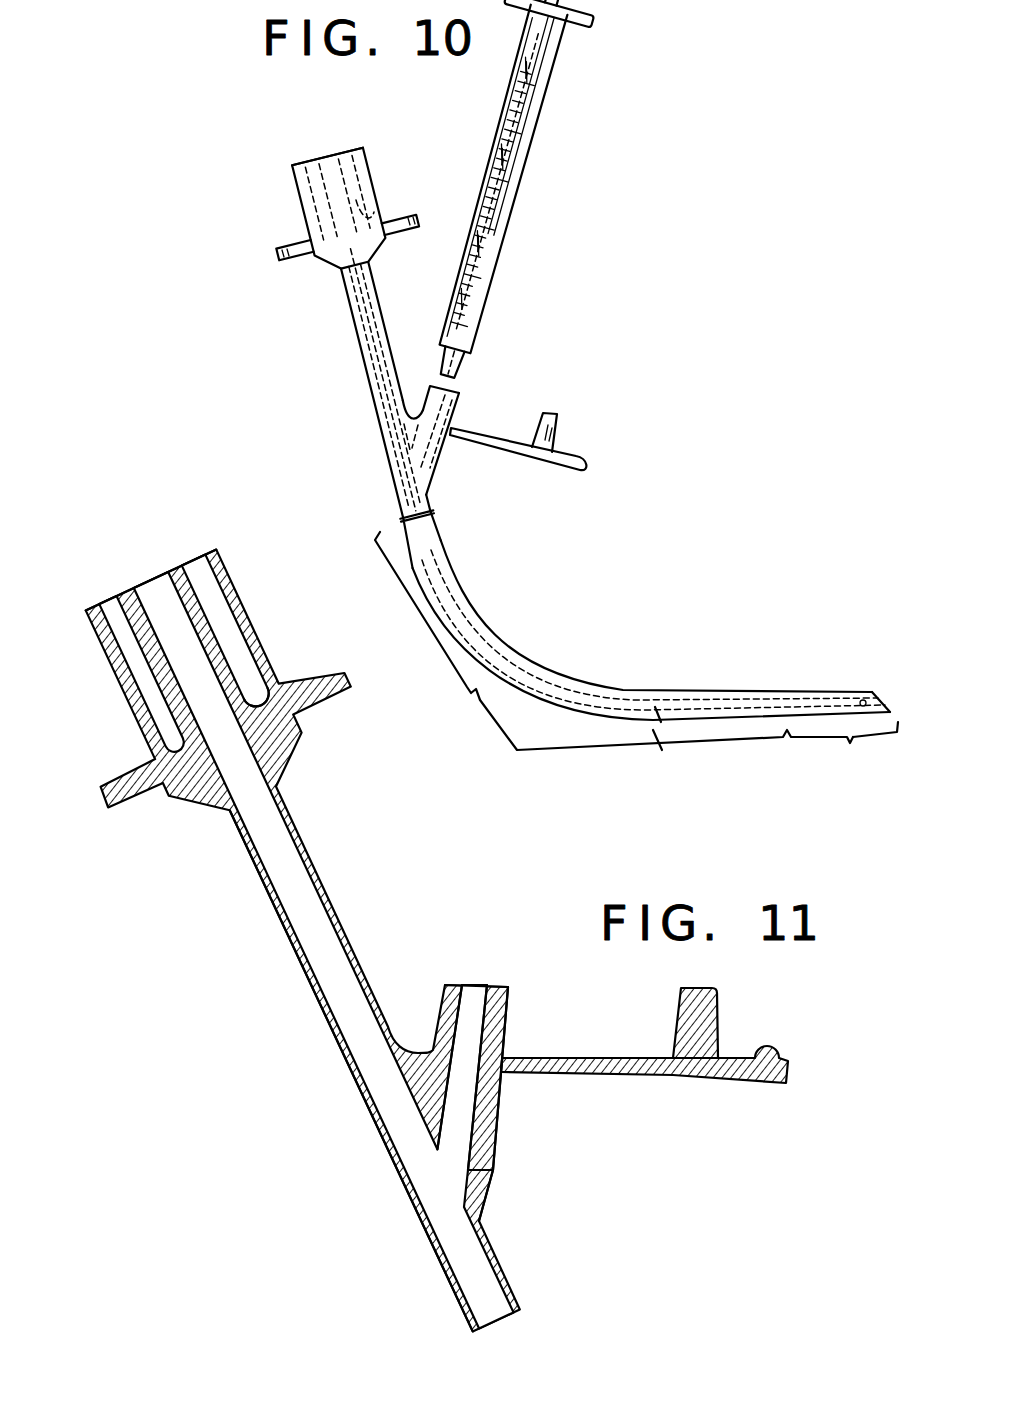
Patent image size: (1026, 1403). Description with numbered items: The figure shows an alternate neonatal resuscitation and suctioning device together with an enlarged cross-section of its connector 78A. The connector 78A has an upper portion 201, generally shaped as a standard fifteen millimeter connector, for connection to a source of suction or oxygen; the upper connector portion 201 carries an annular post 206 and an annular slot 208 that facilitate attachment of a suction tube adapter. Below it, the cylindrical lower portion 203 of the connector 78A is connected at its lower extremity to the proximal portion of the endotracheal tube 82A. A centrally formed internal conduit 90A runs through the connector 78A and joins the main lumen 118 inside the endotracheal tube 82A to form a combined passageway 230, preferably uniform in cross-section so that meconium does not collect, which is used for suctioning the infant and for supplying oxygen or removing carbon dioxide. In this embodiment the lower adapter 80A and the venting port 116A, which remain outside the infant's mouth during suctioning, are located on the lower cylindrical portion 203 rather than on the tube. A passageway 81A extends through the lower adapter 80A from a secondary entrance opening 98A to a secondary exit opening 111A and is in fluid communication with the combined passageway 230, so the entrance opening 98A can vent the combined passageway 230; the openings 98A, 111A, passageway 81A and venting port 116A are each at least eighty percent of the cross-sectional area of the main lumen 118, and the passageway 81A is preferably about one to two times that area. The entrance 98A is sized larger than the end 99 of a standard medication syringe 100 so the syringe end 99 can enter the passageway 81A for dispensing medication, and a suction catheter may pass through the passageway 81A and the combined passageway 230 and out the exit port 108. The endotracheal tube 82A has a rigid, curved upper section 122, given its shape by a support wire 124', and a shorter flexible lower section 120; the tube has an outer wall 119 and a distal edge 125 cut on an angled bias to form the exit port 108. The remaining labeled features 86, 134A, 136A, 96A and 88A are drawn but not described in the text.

In FIG. 10, the connector hub 86 is at (330, 156).
In FIG. 11, the connector hub 86 is at (150, 580).
In FIG. 10, the upper connector portion 201 is at (292, 183).
In FIG. 11, the upper connector portion 201 is at (130, 710).
In FIG. 10, the annular slot 208 is at (360, 170).
In FIG. 11, the annular slot 208 is at (222, 618).
In FIG. 10, the annular post 206 is at (358, 205).
In FIG. 11, the annular post 206 is at (243, 697).
In FIG. 10, the standard medication syringe 100 is at (518, 180).
In FIG. 10, the syringe end 99 is at (463, 372).
In FIG. 10, the internal conduit 90A is at (365, 310).
In FIG. 11, the internal conduit 90A is at (293, 853).
In FIG. 10, the cylindrical lower portion 203 is at (358, 338).
In FIG. 11, the cylindrical lower portion 203 is at (280, 918).
In FIG. 10, the connector 78A is at (350, 398).
In FIG. 11, the connector 78A is at (288, 968).
In FIG. 10, the secondary exit opening 111A is at (405, 465).
In FIG. 11, the secondary exit opening 111A is at (490, 1172).
In FIG. 10, the secondary entrance opening 98A is at (460, 388).
In FIG. 11, the secondary entrance opening 98A is at (472, 985).
In FIG. 10, the adapter passageway 81A is at (440, 415).
In FIG. 11, the adapter passageway 81A is at (503, 987).
In FIG. 10, the side arm 134A is at (488, 434).
In FIG. 11, the side arm 134A is at (577, 1058).
In FIG. 10, the locking tab 136A is at (558, 428).
In FIG. 11, the locking tab 136A is at (710, 1023).
In FIG. 10, the lower adapter 80A is at (460, 469).
In FIG. 11, the lower adapter 80A is at (525, 1107).
In FIG. 10, the branch wall 96A is at (423, 497).
In FIG. 11, the branch wall 96A is at (500, 1128).
In FIG. 10, the venting port 116A is at (430, 515).
In FIG. 11, the venting port 116A is at (457, 1140).
In FIG. 10, the catheter tube 88A is at (442, 570).
In FIG. 10, the endotracheal tube 82A is at (523, 665).
In FIG. 10, the shape support member or wire 124' is at (653, 630).
In FIG. 10, the outer wall 119 is at (623, 690).
In FIG. 10, the distal edge 125 is at (863, 699).
In FIG. 10, the exit port 108 is at (905, 665).
In FIG. 10, the upper section 122 is at (614, 641).
In FIG. 10, the lower section 120 is at (866, 751).
In FIG. 10, the main lumen 118 is at (662, 750).
In FIG. 10, the combined passageway 230 is at (557, 712).